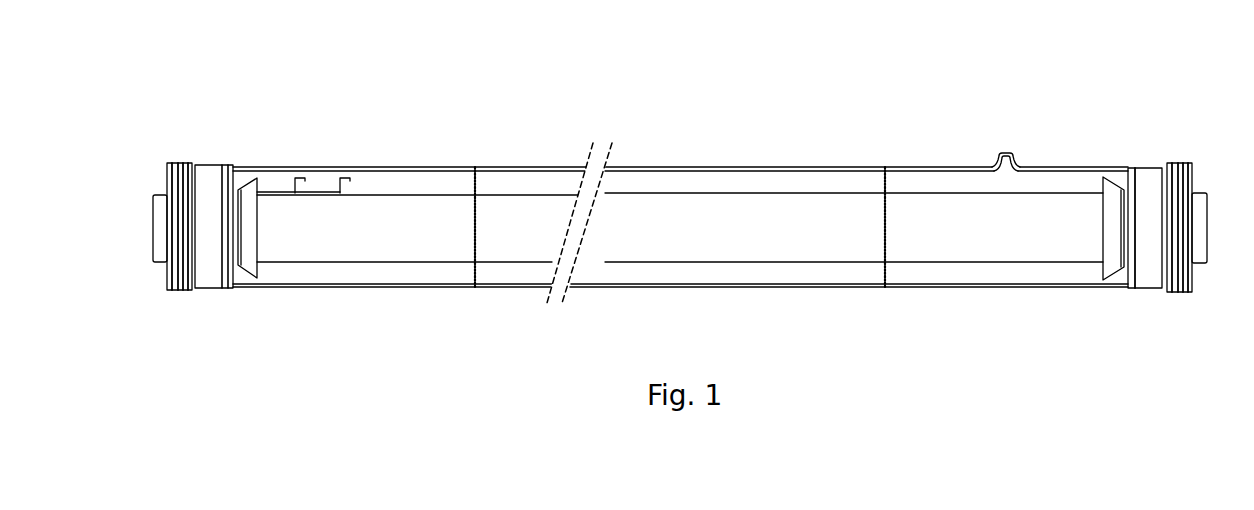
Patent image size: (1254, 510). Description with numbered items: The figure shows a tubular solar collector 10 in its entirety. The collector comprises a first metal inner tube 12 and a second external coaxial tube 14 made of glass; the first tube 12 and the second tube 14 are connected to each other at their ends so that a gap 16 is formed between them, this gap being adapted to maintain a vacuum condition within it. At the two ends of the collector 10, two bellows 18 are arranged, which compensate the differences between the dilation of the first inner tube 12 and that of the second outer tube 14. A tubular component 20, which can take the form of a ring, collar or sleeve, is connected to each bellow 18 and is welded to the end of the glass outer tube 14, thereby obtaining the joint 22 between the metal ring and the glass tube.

The tubular solar collector 10 is at (220, 99).
The first metal inner tube 12 is at (512, 262).
The second external coaxial tube 14 is at (348, 288).
The gap 16 is at (813, 275).
The bellows 18 is at (181, 288).
The tubular component 20 is at (1150, 280).
The joint 22 is at (1131, 167).